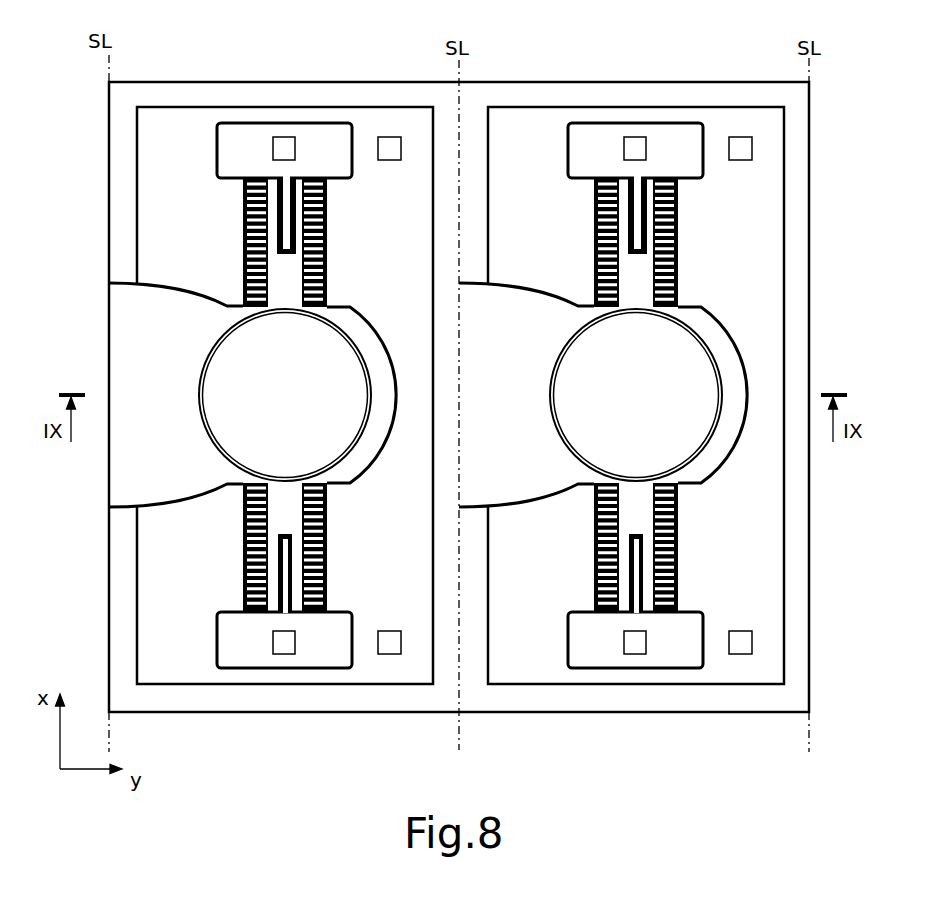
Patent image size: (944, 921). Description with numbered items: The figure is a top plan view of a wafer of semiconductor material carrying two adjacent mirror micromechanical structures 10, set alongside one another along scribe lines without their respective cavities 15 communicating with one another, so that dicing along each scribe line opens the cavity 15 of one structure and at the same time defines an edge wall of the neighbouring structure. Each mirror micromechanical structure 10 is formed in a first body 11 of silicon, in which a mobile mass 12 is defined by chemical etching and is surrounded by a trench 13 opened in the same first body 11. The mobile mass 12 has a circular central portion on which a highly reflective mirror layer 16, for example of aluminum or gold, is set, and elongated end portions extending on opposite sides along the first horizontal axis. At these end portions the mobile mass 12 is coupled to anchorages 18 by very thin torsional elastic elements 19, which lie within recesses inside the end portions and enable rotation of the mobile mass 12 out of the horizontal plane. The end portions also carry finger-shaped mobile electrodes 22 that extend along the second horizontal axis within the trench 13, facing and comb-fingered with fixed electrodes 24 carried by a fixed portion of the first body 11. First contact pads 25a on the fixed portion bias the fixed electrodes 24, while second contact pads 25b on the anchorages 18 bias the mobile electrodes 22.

The mirror micromechanical structure 10 is at (281, 65).
The first body 11 is at (137, 612).
The mobile mass 12 is at (203, 338).
The trench 13 is at (381, 446).
The cavity 15 is at (171, 486).
The mirror layer 16 is at (299, 441).
The anchorages 18 is at (325, 136).
The elastic elements 19 is at (294, 232).
The mobile electrodes 22 is at (243, 221).
The fixed electrodes 24 is at (243, 270).
The first contact pads 25a is at (389, 141).
The second contact pads 25b is at (282, 143).